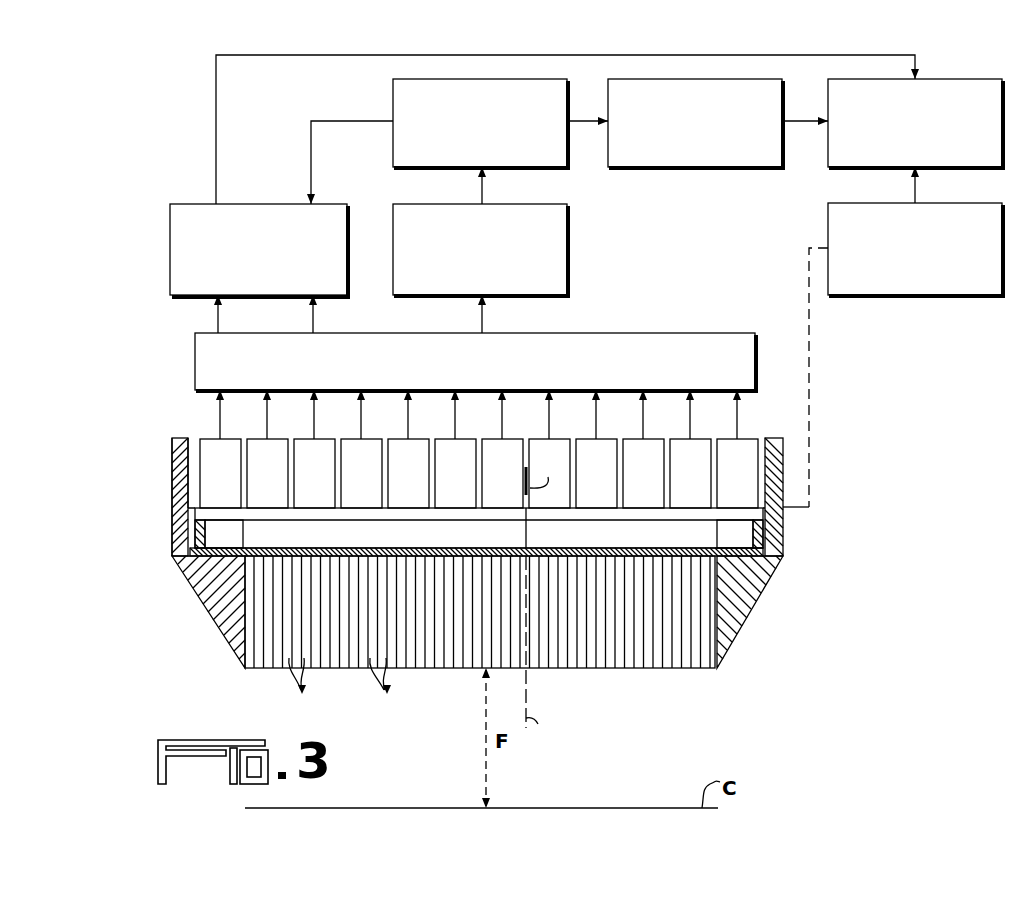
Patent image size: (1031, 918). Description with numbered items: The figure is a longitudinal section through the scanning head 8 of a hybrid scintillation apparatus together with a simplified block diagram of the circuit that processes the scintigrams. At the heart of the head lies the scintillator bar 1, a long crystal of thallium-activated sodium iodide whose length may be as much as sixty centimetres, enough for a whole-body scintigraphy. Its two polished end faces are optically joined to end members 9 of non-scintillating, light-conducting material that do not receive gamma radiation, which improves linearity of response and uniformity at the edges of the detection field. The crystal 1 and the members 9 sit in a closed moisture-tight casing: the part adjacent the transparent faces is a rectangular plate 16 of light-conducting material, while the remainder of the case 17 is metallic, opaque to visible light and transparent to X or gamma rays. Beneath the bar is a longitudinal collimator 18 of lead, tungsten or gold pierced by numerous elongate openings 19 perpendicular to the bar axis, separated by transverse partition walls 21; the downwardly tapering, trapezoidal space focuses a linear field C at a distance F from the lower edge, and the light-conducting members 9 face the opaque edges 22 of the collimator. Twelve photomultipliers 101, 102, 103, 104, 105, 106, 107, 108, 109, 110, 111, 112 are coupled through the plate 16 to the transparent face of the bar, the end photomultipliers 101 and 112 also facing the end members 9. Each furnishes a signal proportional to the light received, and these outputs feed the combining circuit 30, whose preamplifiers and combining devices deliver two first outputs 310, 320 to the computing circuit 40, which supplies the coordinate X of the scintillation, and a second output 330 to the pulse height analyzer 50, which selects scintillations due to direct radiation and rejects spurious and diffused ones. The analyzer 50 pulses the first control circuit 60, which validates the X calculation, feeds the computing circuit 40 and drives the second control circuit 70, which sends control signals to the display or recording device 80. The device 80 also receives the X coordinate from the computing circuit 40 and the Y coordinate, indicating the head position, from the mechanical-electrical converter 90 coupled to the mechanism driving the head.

The scintillator bar 1 is at (685, 540).
The scanning head 8 is at (172, 472).
The end members 9 is at (227, 533).
The rectangular plate 16 is at (748, 515).
The case 17 is at (170, 552).
The longitudinal collimator 18 is at (528, 674).
The elongate openings 19 is at (302, 690).
The transverse partition walls 21 is at (386, 690).
The opaque edges 22 is at (230, 623).
The combining circuit 30 is at (691, 333).
The computing circuit 40 is at (190, 204).
The pulse height analyzer 50 is at (405, 204).
The first control circuit 60 is at (393, 97).
The second control circuit 70 is at (650, 167).
The display device 80 is at (950, 79).
The mechanical-electrical converter 90 is at (940, 295).
The photomultiplier 101 is at (190, 429).
The photomultiplier 102 is at (237, 429).
The photomultiplier 103 is at (284, 429).
The photomultiplier 104 is at (331, 429).
The photomultiplier 105 is at (378, 429).
The photomultiplier 106 is at (425, 429).
The photomultiplier 107 is at (472, 429).
The photomultiplier 108 is at (519, 429).
The photomultiplier 109 is at (566, 429).
The photomultiplier 110 is at (613, 429).
The photomultiplier 111 is at (660, 429).
The photomultiplier 112 is at (707, 429).
The first output 310 is at (214, 316).
The first output 320 is at (317, 316).
The second output 330 is at (487, 316).